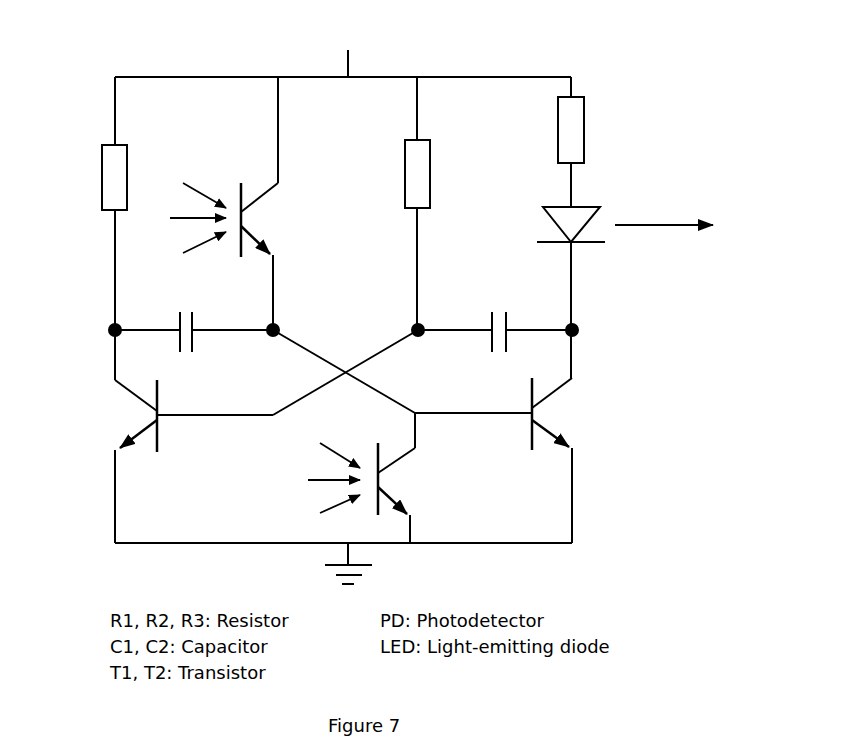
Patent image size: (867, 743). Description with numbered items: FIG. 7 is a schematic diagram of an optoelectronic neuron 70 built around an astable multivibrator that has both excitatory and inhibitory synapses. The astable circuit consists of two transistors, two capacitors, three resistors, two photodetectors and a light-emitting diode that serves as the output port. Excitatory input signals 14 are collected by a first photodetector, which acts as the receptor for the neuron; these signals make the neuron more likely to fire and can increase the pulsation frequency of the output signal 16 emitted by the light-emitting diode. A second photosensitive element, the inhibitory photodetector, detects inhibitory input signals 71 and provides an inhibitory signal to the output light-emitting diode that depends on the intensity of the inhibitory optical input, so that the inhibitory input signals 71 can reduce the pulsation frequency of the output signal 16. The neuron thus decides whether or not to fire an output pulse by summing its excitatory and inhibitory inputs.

The neuron circuit 70 is at (455, 50).
The input signals 14 is at (188, 212).
The inhibitory input signals 71 is at (322, 497).
The output signal 16 is at (715, 215).